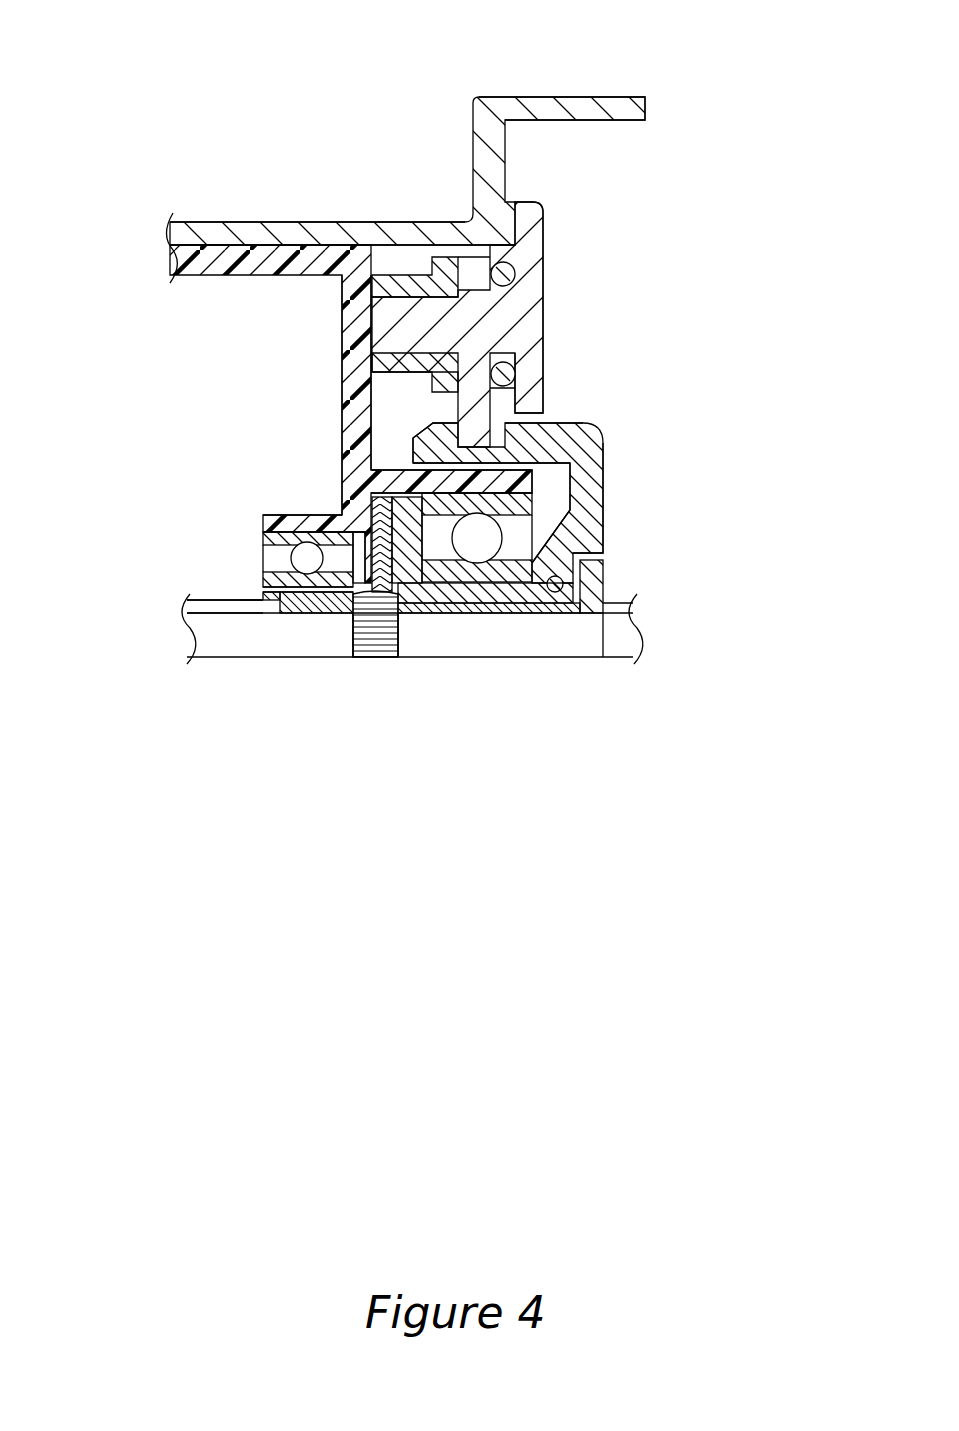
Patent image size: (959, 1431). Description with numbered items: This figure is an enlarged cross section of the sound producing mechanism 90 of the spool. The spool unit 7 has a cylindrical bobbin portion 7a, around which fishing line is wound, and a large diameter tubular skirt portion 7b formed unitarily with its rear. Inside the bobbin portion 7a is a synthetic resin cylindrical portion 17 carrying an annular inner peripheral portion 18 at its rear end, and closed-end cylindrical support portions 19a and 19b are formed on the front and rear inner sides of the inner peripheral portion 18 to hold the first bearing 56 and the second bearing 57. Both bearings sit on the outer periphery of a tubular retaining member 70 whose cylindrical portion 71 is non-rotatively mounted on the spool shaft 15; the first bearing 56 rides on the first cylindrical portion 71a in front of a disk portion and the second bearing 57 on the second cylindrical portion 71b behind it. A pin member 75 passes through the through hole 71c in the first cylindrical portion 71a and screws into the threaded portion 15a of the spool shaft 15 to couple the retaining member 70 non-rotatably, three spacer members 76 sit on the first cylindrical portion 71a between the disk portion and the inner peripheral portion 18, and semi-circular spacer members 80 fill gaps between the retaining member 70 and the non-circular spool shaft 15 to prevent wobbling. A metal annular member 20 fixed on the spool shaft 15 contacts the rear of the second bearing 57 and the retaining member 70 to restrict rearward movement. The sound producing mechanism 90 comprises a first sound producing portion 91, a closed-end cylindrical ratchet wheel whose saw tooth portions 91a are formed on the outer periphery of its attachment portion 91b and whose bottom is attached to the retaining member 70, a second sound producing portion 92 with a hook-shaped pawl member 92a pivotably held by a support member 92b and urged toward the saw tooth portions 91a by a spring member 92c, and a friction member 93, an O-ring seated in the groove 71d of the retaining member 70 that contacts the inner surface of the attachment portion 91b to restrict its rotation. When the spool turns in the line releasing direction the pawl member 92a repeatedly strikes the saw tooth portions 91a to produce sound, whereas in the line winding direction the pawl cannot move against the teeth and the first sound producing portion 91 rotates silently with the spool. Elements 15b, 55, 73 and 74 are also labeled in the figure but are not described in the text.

The spool unit 7 is at (280, 148).
The bobbin portion 7a is at (362, 237).
The skirt portion 7b is at (583, 97).
The spool shaft 15 is at (617, 650).
The threaded portion 15a is at (367, 642).
The surface of frame plate 15b is at (263, 602).
The cylindrical portion 17 is at (235, 266).
The inner peripheral portion 18 is at (346, 364).
The support portion 19a is at (290, 520).
The support portion 19b is at (510, 480).
The annular member 20 is at (593, 588).
The bearing assembly 55 is at (410, 842).
The first bearing 56 is at (310, 568).
The second bearing 57 is at (477, 547).
The retaining member 70 is at (497, 607).
The cylindrical portion 71 is at (453, 598).
The first cylindrical portion 71a is at (318, 592).
The second cylindrical portion 71b is at (563, 617).
The through hole 71c is at (385, 638).
The groove 71d is at (553, 605).
The washer 73 is at (312, 604).
The gap 74 is at (245, 600).
The pin member 75 is at (375, 635).
The spacer member 76 is at (360, 518).
The spacer member 80 is at (262, 596).
The sound producing mechanism 90 is at (658, 323).
The first sound producing portion 91 is at (643, 460).
The saw tooth portions 91a is at (500, 433).
The attachment portion 91b is at (587, 485).
The second sound producing portion 92 is at (551, 326).
The pawl member 92a is at (482, 395).
The support member 92b is at (525, 298).
The spring member 92c is at (510, 267).
The friction member 93 is at (568, 572).